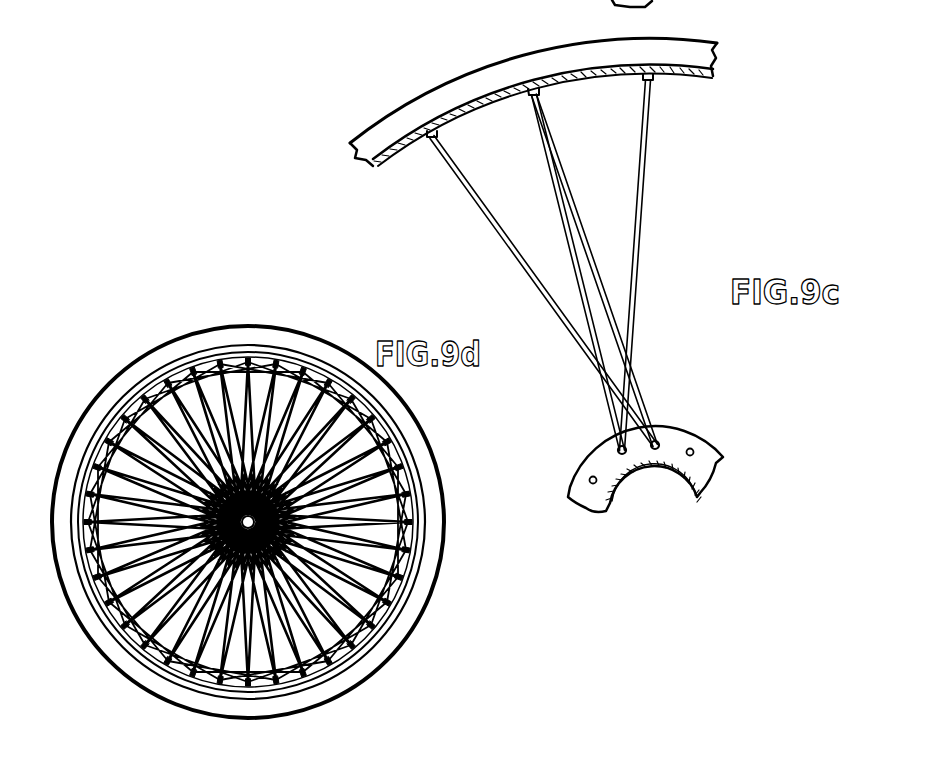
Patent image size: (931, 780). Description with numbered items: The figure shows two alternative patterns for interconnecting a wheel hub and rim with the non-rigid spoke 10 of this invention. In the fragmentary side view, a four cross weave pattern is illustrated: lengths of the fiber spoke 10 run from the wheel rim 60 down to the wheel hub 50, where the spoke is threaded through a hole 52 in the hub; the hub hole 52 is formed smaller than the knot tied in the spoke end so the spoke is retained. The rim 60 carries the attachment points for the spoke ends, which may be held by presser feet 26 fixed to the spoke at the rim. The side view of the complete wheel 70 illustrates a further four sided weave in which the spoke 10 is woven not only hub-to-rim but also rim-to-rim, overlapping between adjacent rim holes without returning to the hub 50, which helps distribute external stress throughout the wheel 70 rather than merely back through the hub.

In FIG. 9C, the non-rigid spoke 10 is at (651, 181).
In FIG. 9D, the presser feet 26 is at (280, 362).
In FIG. 9C, the wheel hub 50 is at (570, 487).
In FIG. 9C, the hole 52 is at (694, 448).
In FIG. 9C, the wheel rim 60 is at (426, 96).
In FIG. 9D, the wheel rim 60 is at (103, 423).
In FIG. 9D, the wheel 70 is at (88, 631).